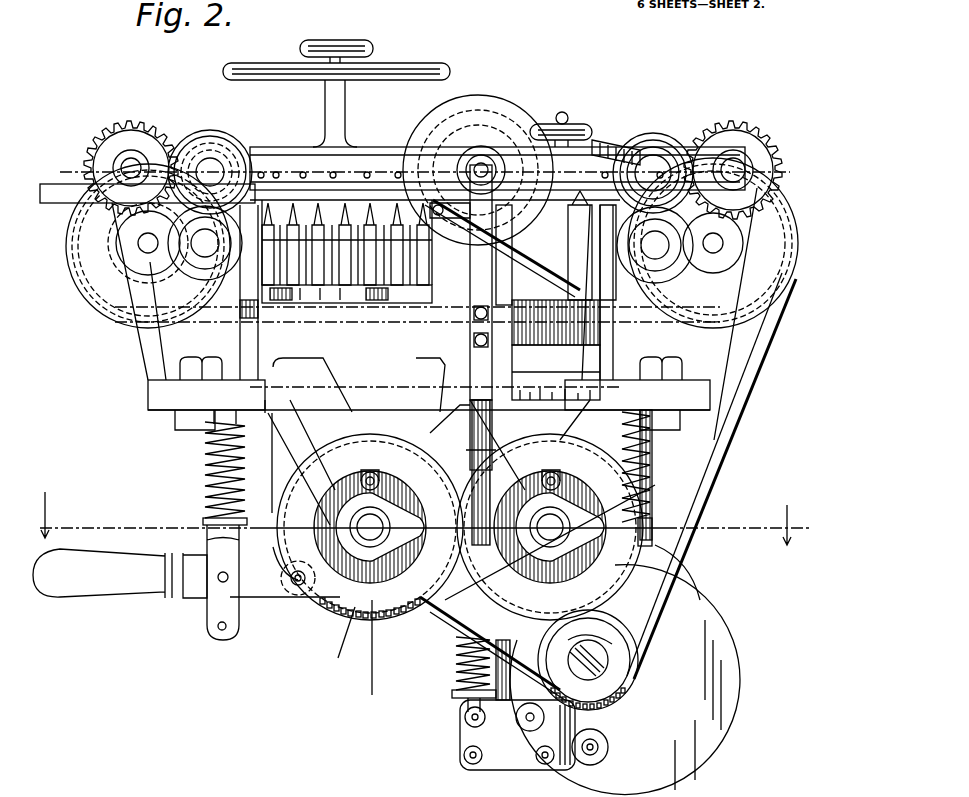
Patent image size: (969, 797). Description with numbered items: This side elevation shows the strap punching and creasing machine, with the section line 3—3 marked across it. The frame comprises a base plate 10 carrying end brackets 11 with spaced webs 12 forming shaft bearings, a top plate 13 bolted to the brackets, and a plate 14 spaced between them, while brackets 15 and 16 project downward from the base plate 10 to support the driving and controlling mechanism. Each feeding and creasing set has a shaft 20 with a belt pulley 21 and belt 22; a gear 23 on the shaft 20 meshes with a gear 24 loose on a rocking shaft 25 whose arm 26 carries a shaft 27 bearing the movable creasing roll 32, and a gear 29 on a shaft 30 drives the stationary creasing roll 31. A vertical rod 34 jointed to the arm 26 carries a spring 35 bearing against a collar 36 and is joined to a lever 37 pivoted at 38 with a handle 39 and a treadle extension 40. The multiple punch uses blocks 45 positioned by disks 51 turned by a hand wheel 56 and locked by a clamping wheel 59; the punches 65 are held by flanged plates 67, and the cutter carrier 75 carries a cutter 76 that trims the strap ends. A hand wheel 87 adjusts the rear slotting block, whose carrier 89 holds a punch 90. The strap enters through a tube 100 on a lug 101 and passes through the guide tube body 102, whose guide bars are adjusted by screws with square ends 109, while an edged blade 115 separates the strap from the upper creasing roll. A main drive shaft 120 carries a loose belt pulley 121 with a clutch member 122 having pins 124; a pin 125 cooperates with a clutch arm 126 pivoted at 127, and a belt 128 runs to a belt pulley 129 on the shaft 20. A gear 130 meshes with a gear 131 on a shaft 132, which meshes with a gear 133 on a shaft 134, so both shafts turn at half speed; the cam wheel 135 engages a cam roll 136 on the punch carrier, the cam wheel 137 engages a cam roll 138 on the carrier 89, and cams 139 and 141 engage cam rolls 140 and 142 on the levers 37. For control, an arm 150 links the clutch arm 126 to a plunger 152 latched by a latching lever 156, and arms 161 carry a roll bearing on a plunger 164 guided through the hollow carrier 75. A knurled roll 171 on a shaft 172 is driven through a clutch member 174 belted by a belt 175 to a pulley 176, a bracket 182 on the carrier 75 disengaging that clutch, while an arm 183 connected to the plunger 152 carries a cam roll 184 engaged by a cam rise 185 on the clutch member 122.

The section line 3— 3 is at (424, 508).
The base plate 10 is at (168, 402).
The end brackets 11 is at (170, 385).
The spaced webs 12 is at (146, 376).
The top plate 13 is at (630, 150).
The plate 14 is at (423, 292).
The bracket 15 is at (280, 466).
The bracket 16 is at (470, 466).
The shaft 20 is at (146, 248).
The belt pulley 21 is at (112, 278).
The belt 22 is at (242, 300).
The gear 23 is at (118, 252).
The gear 24 is at (118, 132).
The shaft 25 is at (135, 160).
The arm 26 is at (178, 162).
The shaft 27 is at (212, 168).
The gear 29 is at (158, 278).
The shaft 30 is at (205, 250).
The creasing roll 31 is at (210, 256).
The creasing roll 32 is at (240, 160).
The vertical rod 34 is at (212, 467).
The spring 35 is at (212, 487).
The collar 36 is at (203, 522).
The lever 37 is at (200, 588).
The pivot 38 is at (296, 586).
The handle 39 is at (108, 588).
The extension 40 is at (222, 632).
The block 45 is at (380, 272).
The disks 51 is at (368, 147).
The hand wheel 56 is at (440, 70).
The clamping wheel 59 is at (355, 48).
The punches 65 is at (335, 293).
The flanged plates 67 is at (429, 385).
The cutter carrier 75 is at (512, 285).
The cutter 76 is at (385, 212).
The hand wheel 87 is at (572, 124).
The carrier 89 is at (556, 360).
The punch 90 is at (552, 322).
The tube 100 is at (58, 190).
The lug 101 is at (115, 180).
The body part 102 is at (432, 203).
The square ends 109 is at (262, 172).
The edged blade 115 is at (742, 165).
The main drive shaft 120 is at (600, 668).
The belt pulley 121 is at (640, 655).
The clutch member 122 is at (642, 648).
The pins 124 is at (678, 795).
The pin 125 is at (494, 660).
The clutch arm 126 is at (452, 695).
The pivot 127 is at (520, 722).
The belt 128 is at (740, 440).
The belt pulley 129 is at (780, 298).
The gear 130 is at (632, 698).
The gear 131 is at (652, 492).
The shaft 132 is at (550, 510).
The gear 133 is at (385, 624).
The shaft 134 is at (365, 510).
The cam wheel 135 is at (340, 640).
The cam roll 136 is at (372, 472).
The cam wheel 137 is at (650, 457).
The cam roll 138 is at (552, 472).
The cam 139 is at (330, 538).
The cam roll 140 is at (380, 655).
The cam 141 is at (450, 606).
The cam roll 142 is at (535, 658).
The arm 150 is at (465, 722).
The plunger 152 is at (456, 648).
The latching lever 156 is at (500, 492).
The arms 161 is at (447, 216).
The plunger 164 is at (480, 380).
The knurled roll 171 is at (490, 165).
The shaft 172 is at (478, 162).
The clutch member 174 is at (497, 103).
The belt 175 is at (612, 140).
The pulley 176 is at (752, 395).
The bracket 182 is at (510, 250).
The arm 183 is at (512, 762).
The cam roll 184 is at (608, 747).
The cam rise 185 is at (678, 552).